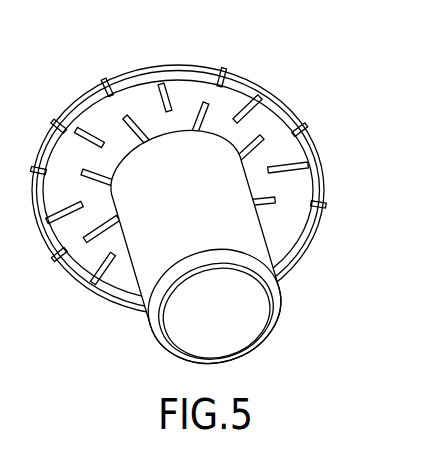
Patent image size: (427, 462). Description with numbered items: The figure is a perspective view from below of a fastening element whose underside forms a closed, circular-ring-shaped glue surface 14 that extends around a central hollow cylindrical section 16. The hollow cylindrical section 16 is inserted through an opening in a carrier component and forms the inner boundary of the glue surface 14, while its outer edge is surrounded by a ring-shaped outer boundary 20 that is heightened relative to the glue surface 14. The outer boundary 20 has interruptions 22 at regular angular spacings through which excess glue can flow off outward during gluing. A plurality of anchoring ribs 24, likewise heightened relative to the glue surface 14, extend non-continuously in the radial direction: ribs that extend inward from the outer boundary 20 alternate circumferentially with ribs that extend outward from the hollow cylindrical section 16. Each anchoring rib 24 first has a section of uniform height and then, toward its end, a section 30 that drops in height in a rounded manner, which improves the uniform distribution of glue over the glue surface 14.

The glue surface 14 is at (262, 117).
The hollow cylindrical section 16 is at (240, 228).
The outer boundary 20 is at (141, 77).
The interruptions 22 is at (219, 78).
The anchoring ribs 24 is at (81, 128).
The section 30 is at (63, 132).